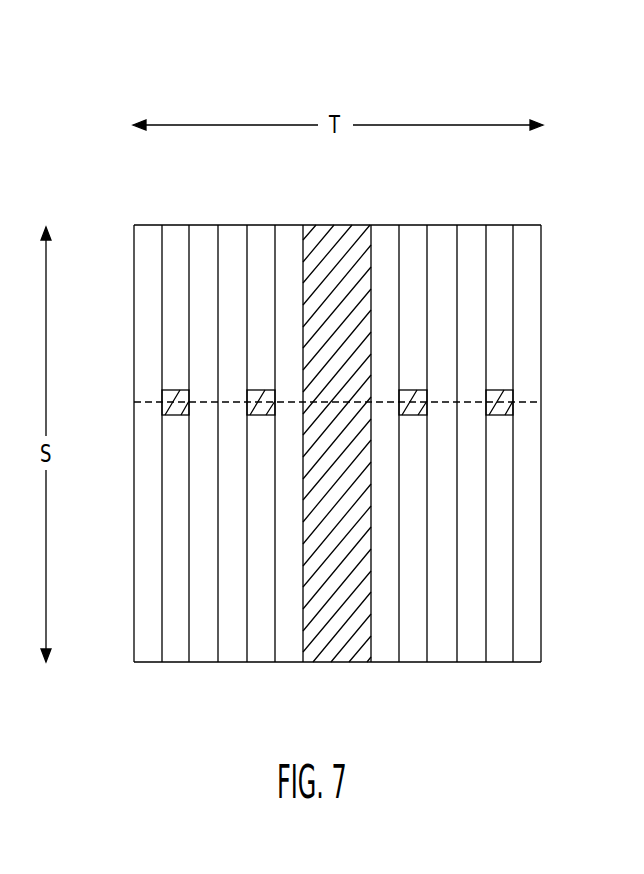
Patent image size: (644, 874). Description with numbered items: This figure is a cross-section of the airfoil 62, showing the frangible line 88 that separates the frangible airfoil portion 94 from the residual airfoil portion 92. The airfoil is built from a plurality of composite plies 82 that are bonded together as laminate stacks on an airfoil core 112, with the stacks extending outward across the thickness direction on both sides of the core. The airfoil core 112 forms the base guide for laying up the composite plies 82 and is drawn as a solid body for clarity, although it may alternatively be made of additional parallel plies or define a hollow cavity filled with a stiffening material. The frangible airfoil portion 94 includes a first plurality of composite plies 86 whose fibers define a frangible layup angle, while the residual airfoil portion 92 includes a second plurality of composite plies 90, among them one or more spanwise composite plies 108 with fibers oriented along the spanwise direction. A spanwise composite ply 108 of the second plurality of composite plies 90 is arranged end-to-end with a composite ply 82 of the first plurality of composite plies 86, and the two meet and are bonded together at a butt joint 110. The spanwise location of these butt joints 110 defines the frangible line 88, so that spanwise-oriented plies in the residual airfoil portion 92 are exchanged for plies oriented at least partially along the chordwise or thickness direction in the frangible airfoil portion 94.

The airfoil 62 is at (181, 69).
The composite ply 82 is at (205, 225).
The first plurality of composite plies 86 is at (122, 365).
The frangible line 88 is at (523, 401).
The second plurality of composite plies 90 is at (120, 568).
The residual airfoil portion 92 is at (558, 567).
The frangible airfoil portion 94 is at (553, 312).
The spanwise composite ply 108 is at (175, 662).
The butt joint 110 is at (175, 416).
The airfoil core 112 is at (348, 662).